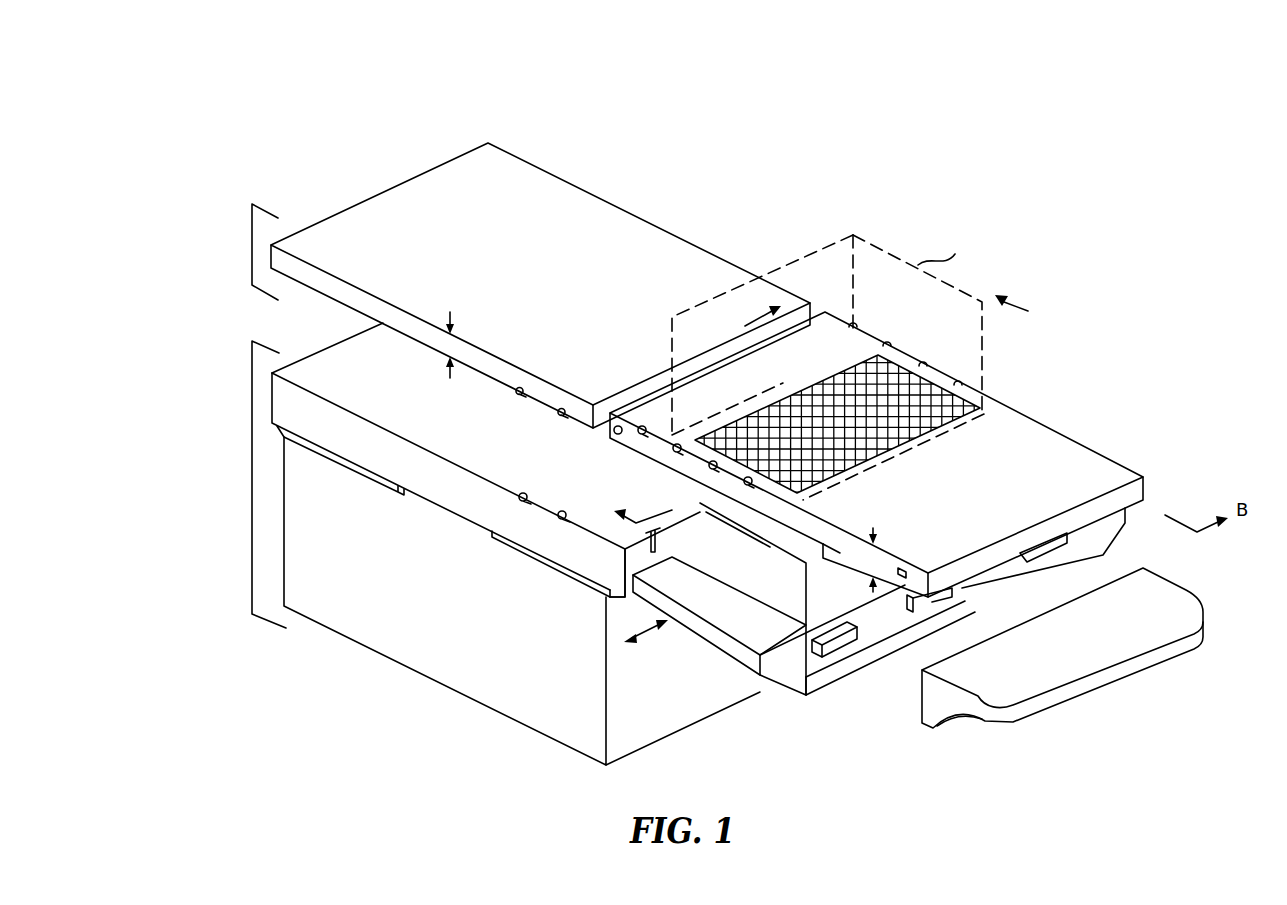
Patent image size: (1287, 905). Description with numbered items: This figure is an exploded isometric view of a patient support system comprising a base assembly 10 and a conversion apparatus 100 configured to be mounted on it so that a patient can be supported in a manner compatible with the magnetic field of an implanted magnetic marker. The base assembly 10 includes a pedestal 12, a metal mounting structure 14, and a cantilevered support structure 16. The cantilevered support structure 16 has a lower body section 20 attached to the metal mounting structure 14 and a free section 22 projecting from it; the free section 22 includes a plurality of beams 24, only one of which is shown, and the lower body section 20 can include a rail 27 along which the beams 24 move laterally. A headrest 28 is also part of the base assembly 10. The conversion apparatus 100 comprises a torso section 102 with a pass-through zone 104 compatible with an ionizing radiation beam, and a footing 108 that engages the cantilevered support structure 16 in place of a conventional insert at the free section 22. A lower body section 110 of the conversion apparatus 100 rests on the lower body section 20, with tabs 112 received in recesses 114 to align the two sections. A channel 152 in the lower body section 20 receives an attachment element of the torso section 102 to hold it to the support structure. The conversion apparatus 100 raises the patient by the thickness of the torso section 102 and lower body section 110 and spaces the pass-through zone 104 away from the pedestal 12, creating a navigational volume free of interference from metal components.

The base assembly 10 is at (250, 496).
The pedestal 12 is at (650, 730).
The metal mounting structure 14 is at (383, 488).
The cantilevered support structure 16 is at (597, 565).
The lower body section 20 is at (326, 420).
The free section 22 is at (740, 660).
The beams 24 is at (737, 616).
The rail 27 is at (733, 538).
The headrest 28 is at (1128, 636).
The conversion apparatus 100 is at (250, 246).
The torso section 102 is at (1102, 467).
The pass-through zone 104 is at (980, 402).
The footing 108 is at (836, 559).
The lower body section 110 is at (608, 218).
The tabs 112 is at (560, 416).
The recesses 114 is at (527, 497).
The channel 152 is at (672, 537).